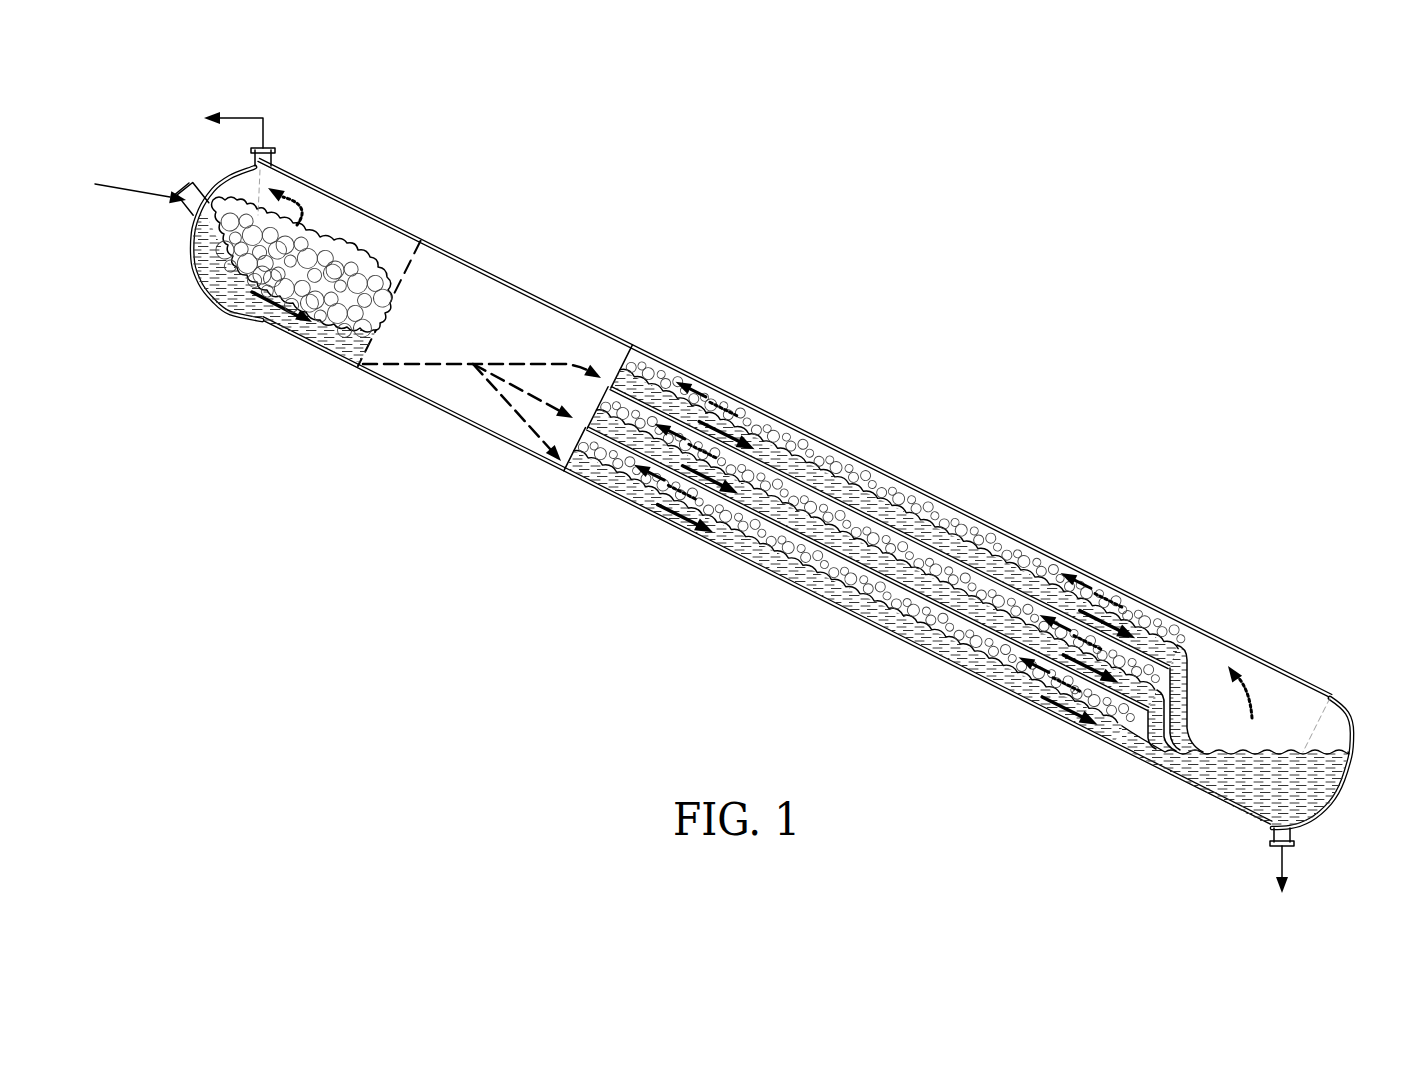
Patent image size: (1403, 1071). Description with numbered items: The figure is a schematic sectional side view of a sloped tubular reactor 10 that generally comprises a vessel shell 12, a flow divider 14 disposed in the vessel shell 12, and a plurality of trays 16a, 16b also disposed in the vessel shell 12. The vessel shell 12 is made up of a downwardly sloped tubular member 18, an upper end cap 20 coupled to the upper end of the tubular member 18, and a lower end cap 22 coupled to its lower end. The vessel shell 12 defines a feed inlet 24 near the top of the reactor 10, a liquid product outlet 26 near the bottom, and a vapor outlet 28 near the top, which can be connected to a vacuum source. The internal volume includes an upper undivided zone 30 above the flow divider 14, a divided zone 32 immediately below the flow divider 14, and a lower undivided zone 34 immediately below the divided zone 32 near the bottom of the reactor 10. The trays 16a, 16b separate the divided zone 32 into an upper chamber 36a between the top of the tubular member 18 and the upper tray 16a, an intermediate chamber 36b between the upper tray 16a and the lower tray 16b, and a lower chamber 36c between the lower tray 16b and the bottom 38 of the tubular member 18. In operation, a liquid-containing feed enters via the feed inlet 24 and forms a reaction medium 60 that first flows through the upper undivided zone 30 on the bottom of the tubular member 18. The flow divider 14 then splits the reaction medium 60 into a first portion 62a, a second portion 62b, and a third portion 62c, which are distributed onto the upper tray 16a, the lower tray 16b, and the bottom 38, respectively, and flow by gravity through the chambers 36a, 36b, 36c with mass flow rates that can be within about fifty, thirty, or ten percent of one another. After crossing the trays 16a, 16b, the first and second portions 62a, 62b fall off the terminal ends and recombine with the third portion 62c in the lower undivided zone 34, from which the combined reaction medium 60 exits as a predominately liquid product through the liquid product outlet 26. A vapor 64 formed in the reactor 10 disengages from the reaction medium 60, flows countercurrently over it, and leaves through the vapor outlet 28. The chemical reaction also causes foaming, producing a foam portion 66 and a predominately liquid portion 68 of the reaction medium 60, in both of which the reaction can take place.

The sloped tubular reactor 10 is at (846, 302).
The vessel shell 12 is at (803, 430).
The flow divider 14 is at (480, 338).
The upper tray 16a is at (820, 497).
The lower tray 16b is at (890, 590).
The tubular member 18 is at (903, 487).
The upper end cap 20 is at (193, 242).
The lower end cap 22 is at (1330, 803).
The feed inlet 24 is at (198, 192).
The liquid product outlet 26 is at (1270, 834).
The vapor outlet 28 is at (276, 160).
The upper undivided zone 30 is at (367, 243).
The divided zone 32 is at (975, 548).
The lower undivided zone 34 is at (1263, 683).
The upper chamber 36a is at (847, 465).
The intermediate chamber 36b is at (925, 553).
The lower chamber 36c is at (1000, 640).
The bottom of tubular member 38 is at (985, 677).
The reaction medium 60 is at (247, 260).
The first portion of reaction medium 62a is at (775, 465).
The second portion of reaction medium 62b is at (855, 545).
The third portion of reaction medium 62c is at (930, 645).
The vapor 64 is at (310, 208).
The foam portion 66 is at (323, 257).
The predominately liquid portion 68 is at (250, 295).